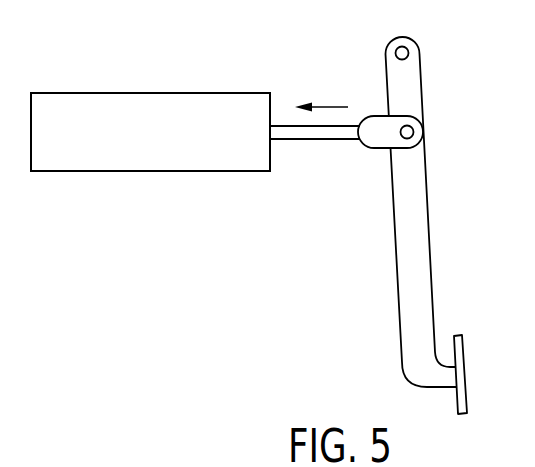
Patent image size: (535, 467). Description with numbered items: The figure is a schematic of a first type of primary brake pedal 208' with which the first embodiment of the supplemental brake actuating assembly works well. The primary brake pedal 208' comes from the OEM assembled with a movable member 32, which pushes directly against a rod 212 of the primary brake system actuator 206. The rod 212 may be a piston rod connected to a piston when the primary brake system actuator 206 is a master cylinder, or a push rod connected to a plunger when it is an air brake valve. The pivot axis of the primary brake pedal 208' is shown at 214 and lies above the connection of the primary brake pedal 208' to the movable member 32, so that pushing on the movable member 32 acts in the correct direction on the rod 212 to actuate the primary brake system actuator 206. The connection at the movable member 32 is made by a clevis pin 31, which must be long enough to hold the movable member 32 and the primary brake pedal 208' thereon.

The primary brake system actuator 206 is at (151, 171).
The rod 212 is at (313, 140).
The movable member 32 is at (375, 116).
The clevis pin 31 is at (412, 124).
The pivot axis 214 is at (405, 48).
The primary brake pedal 208' is at (456, 225).